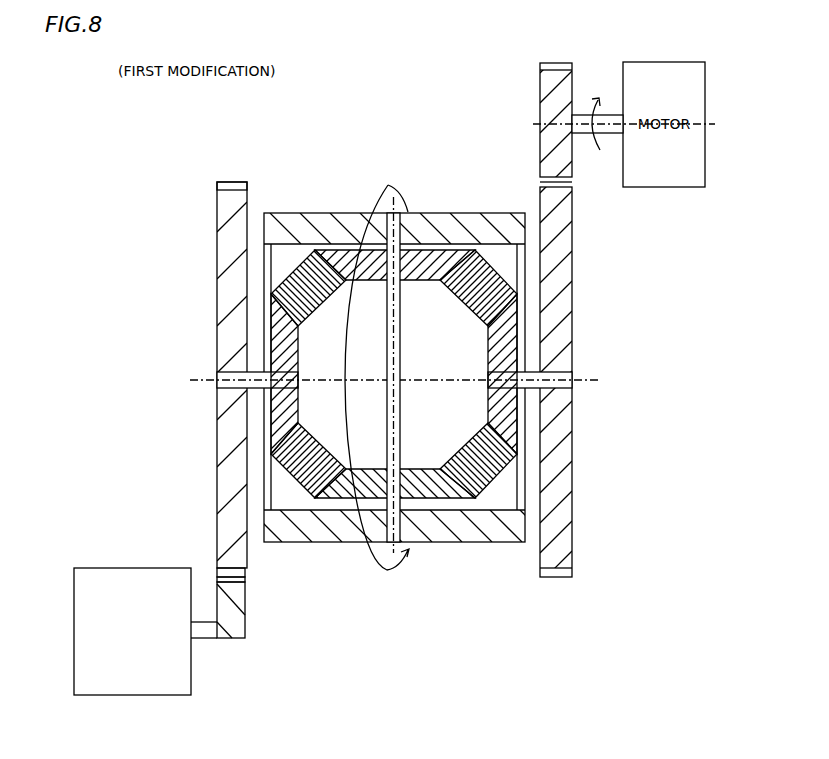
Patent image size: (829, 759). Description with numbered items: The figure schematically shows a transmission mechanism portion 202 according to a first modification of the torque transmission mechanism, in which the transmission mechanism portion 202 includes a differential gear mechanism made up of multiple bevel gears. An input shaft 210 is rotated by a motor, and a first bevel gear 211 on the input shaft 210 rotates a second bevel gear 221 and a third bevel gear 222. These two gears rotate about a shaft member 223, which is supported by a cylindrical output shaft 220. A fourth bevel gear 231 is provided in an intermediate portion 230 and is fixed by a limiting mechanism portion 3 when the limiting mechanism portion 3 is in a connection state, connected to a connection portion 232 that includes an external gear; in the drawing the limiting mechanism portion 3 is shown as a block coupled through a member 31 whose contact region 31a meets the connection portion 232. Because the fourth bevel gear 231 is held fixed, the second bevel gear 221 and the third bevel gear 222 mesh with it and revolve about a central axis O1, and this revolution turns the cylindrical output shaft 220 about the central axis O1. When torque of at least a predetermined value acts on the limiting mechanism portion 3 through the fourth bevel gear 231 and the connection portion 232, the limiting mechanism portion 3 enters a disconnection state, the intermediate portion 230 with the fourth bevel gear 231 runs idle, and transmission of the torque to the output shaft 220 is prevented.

The limiting mechanism portion 3 is at (191, 683).
The limiting member 31 is at (248, 616).
The contact portion of limiting member 31a is at (248, 582).
The transmission mechanism portion 202 is at (465, 570).
The input shaft 210 is at (540, 362).
The first bevel gear 211 is at (520, 320).
The cylindrical output shaft 220 is at (473, 216).
The second bevel gear 221 is at (428, 283).
The third bevel gear 222 is at (425, 468).
The shaft member 223 is at (398, 352).
The intermediate portion 230 is at (191, 406).
The fourth bevel gear 231 is at (272, 337).
The connection portion 232 is at (232, 186).
The central axis O1 is at (578, 382).